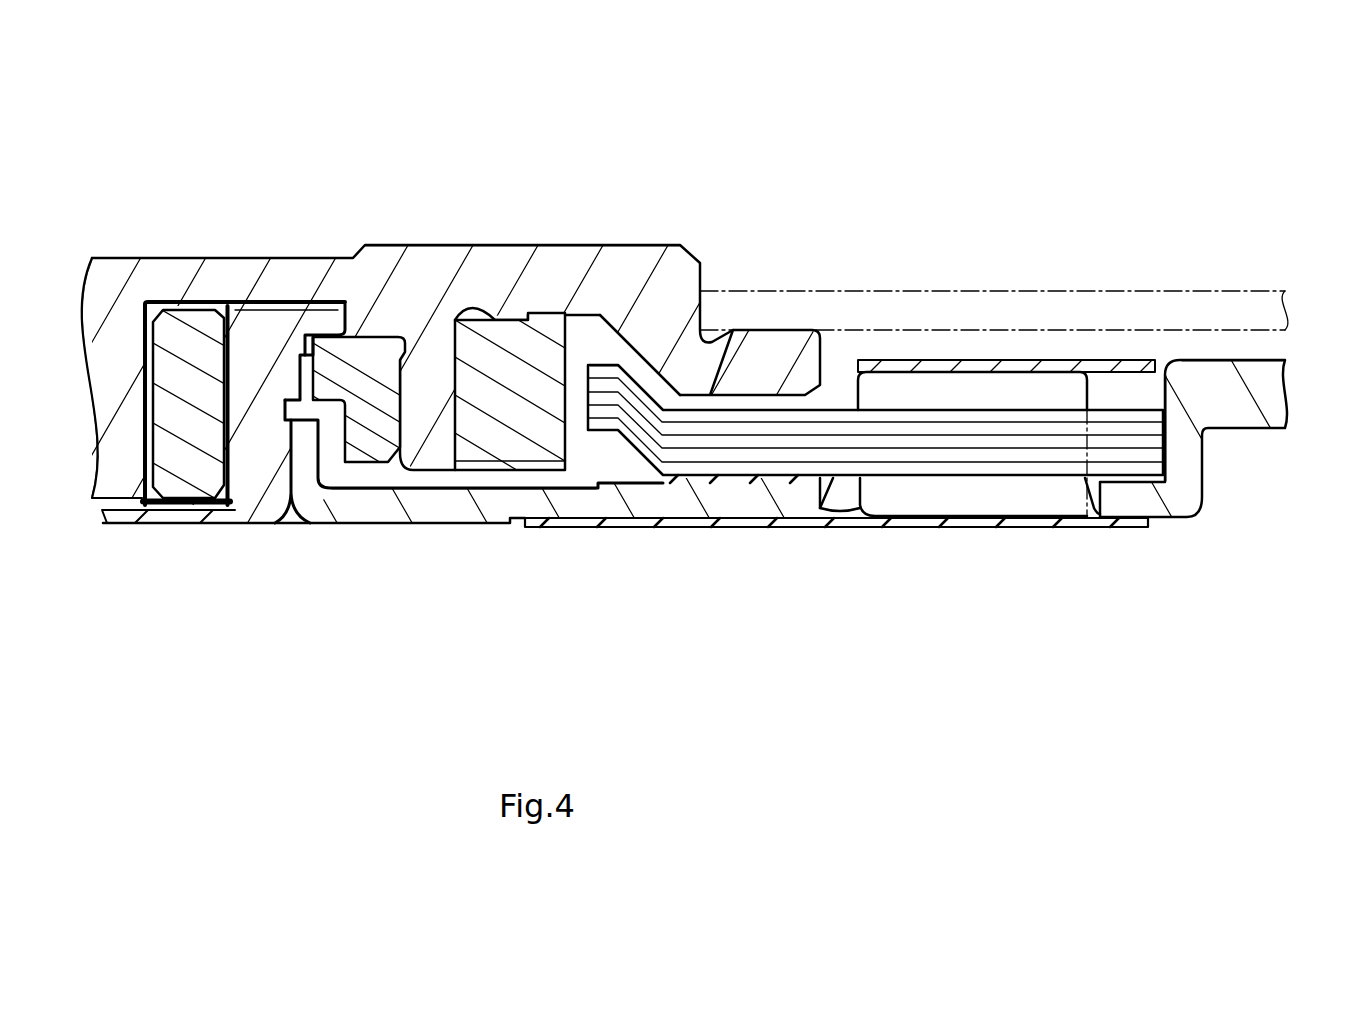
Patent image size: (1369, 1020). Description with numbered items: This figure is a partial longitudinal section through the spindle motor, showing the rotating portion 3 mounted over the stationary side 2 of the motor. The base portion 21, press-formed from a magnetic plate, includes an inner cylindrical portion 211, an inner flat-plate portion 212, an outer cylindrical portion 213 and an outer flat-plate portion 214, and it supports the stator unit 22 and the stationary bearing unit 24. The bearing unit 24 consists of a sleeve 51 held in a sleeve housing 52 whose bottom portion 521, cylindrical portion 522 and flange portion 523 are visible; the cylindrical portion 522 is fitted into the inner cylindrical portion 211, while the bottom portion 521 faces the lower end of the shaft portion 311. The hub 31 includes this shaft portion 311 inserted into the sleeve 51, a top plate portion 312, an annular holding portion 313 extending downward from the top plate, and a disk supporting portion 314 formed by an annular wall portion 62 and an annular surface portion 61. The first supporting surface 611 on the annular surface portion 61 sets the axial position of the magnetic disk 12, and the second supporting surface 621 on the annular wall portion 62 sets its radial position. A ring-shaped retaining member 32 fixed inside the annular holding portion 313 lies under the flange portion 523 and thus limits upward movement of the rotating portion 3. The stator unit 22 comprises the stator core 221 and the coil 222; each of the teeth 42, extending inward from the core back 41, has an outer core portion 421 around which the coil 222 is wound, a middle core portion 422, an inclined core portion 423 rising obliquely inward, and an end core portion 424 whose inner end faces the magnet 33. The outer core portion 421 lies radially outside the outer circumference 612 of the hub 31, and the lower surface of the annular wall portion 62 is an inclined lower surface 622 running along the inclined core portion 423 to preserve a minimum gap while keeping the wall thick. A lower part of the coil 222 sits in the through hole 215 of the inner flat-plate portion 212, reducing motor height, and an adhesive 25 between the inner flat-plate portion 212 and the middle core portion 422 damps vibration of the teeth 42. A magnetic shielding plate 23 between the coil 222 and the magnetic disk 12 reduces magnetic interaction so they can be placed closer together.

The lower assembly 2 is at (734, 509).
The rotating portion 3 is at (399, 172).
The magnetic disk 12 is at (1222, 312).
The base portion 21 is at (1173, 550).
The stator unit 22 is at (875, 505).
The magnetic shielding plate 23 is at (1108, 365).
The stationary bearing unit 24 is at (206, 416).
The adhesive 25 is at (845, 490).
The hub 31 is at (624, 232).
The retaining member 32 is at (370, 407).
The magnet 33 is at (510, 407).
The coil 41 is at (1120, 442).
The teeth 42 is at (875, 523).
The sleeve 51 is at (183, 423).
The sleeve housing 52 is at (233, 540).
The annular surface portion 61 is at (767, 357).
The annular wall portion 62 is at (668, 320).
The inner cylindrical portion 211 is at (303, 443).
The inner flat-plate portion 212 is at (567, 503).
The outer cylindrical portion 213 is at (1187, 457).
The outer flat-plate portion 214 is at (1238, 403).
The through hole 215 is at (1090, 530).
The stator core 221 is at (875, 549).
The coil 222 is at (1052, 497).
The shaft portion 311 is at (103, 357).
The top plate portion 312 is at (498, 270).
The annular holding portion 313 is at (423, 397).
The disk supporting portion 314 is at (661, 105).
The outer core portion 421 is at (933, 443).
The middle core portion 422 is at (760, 443).
The inclined core portion 423 is at (640, 420).
The end core portion 424 is at (885, 633).
The bottom portion 521 is at (127, 517).
The cylindrical portion 522 is at (258, 395).
The flange portion 523 is at (350, 332).
The first supporting surface 611 is at (803, 332).
The outer circumference 612 is at (822, 358).
The second supporting surface 621 is at (712, 340).
The inclined lower surface 622 is at (637, 355).